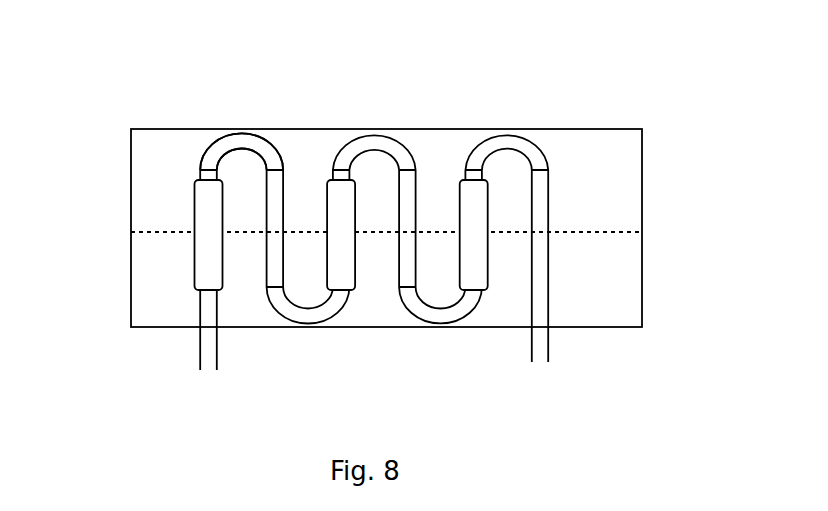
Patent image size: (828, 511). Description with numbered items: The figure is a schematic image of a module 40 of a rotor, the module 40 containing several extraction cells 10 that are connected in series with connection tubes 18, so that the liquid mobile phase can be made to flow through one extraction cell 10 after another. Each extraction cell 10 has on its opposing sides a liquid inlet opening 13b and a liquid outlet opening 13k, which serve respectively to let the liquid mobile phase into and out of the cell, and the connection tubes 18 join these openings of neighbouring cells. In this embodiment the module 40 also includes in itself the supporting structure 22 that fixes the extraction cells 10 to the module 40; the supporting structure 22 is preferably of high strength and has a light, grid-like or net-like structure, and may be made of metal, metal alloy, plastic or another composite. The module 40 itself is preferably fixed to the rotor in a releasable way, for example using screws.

The module 40 is at (593, 78).
The supporting structure 22 is at (595, 232).
The extraction cell 10 is at (493, 300).
The connection tube 18 is at (243, 142).
The liquid outlet opening 13k is at (195, 182).
The liquid inlet opening 13b is at (195, 283).